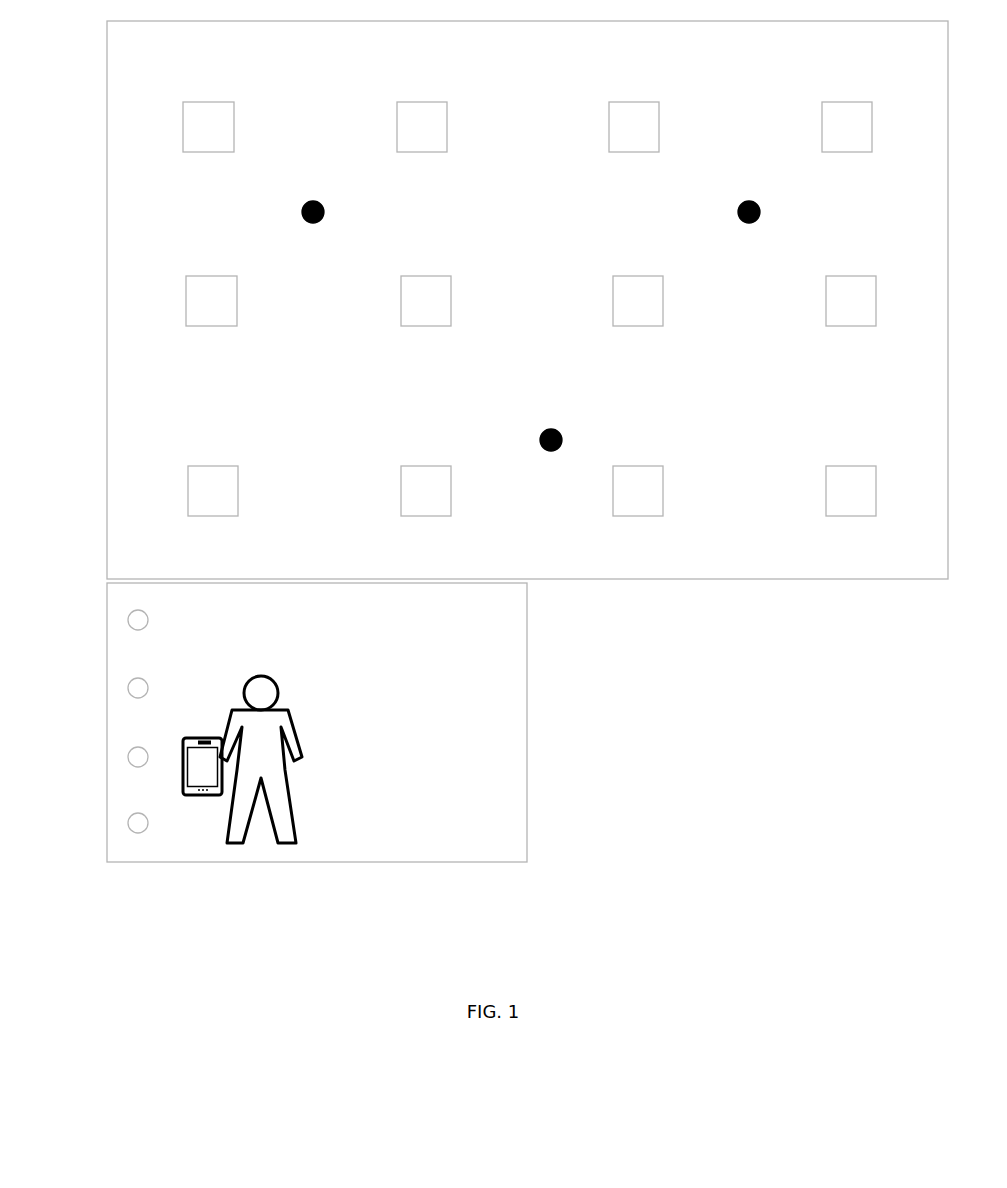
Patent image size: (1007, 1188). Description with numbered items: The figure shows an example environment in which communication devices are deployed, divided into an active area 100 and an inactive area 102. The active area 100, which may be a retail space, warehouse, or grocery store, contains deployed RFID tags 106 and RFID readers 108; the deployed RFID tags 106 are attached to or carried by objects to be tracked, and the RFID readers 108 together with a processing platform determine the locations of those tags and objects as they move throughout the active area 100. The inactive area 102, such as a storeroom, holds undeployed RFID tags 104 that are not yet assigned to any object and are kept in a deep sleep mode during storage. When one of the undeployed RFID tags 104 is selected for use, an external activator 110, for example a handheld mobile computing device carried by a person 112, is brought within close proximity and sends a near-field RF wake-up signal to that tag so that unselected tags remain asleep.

The active area 100 is at (510, 311).
The inactive area 102 is at (442, 627).
The undeployed RFID tags 104 is at (128, 620).
The deployed RFID tags 106 is at (305, 204).
The RFID readers 108 is at (192, 135).
The external activator 110 is at (193, 734).
The user / operator 112 is at (250, 681).